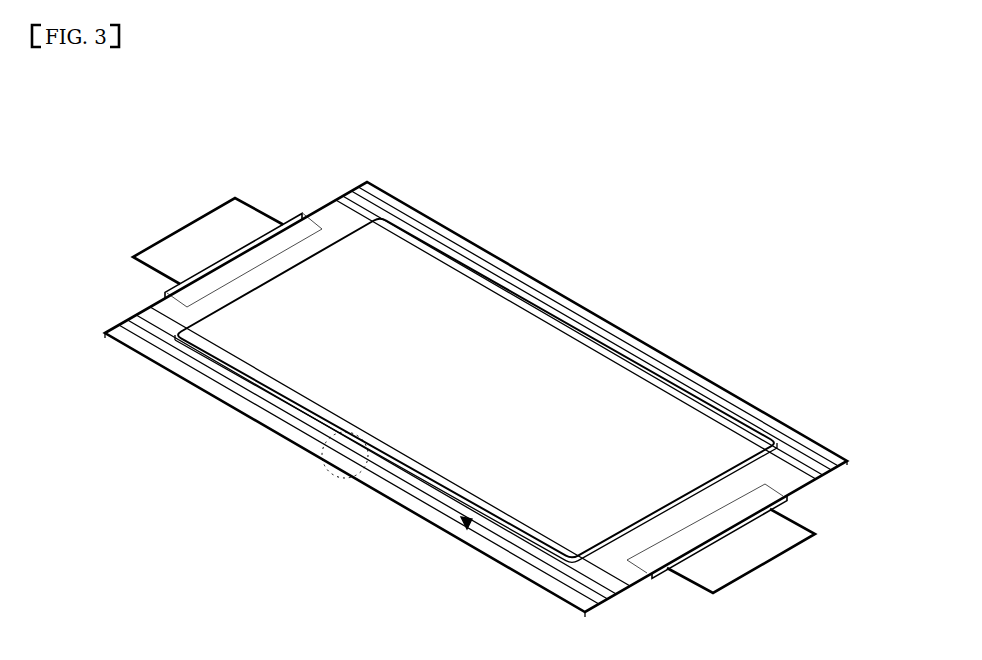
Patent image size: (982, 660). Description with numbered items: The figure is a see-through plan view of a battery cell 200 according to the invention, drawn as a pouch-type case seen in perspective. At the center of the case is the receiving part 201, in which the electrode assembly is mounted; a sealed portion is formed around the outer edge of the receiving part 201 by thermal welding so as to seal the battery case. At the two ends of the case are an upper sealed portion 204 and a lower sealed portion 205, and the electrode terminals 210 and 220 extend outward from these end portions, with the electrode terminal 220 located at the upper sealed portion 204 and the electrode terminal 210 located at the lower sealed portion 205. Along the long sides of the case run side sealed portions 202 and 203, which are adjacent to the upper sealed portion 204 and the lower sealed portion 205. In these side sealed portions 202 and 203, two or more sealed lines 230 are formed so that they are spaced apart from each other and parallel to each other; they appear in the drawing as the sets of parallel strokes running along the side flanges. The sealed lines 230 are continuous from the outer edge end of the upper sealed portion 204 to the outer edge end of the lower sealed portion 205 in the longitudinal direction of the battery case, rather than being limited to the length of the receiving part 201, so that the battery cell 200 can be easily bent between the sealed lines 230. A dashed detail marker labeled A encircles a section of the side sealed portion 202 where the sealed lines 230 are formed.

The battery cell 200 is at (92, 151).
The receiving part 201 is at (545, 347).
The side sealed portion 202 is at (214, 383).
The side sealed portion 203 is at (692, 374).
The upper sealed portion 204 is at (337, 215).
The lower sealed portion 205 is at (795, 478).
The electrode terminal 210 is at (752, 575).
The electrode terminal 220 is at (205, 236).
The sealed lines 230 is at (458, 517).
The detail region A is at (335, 460).